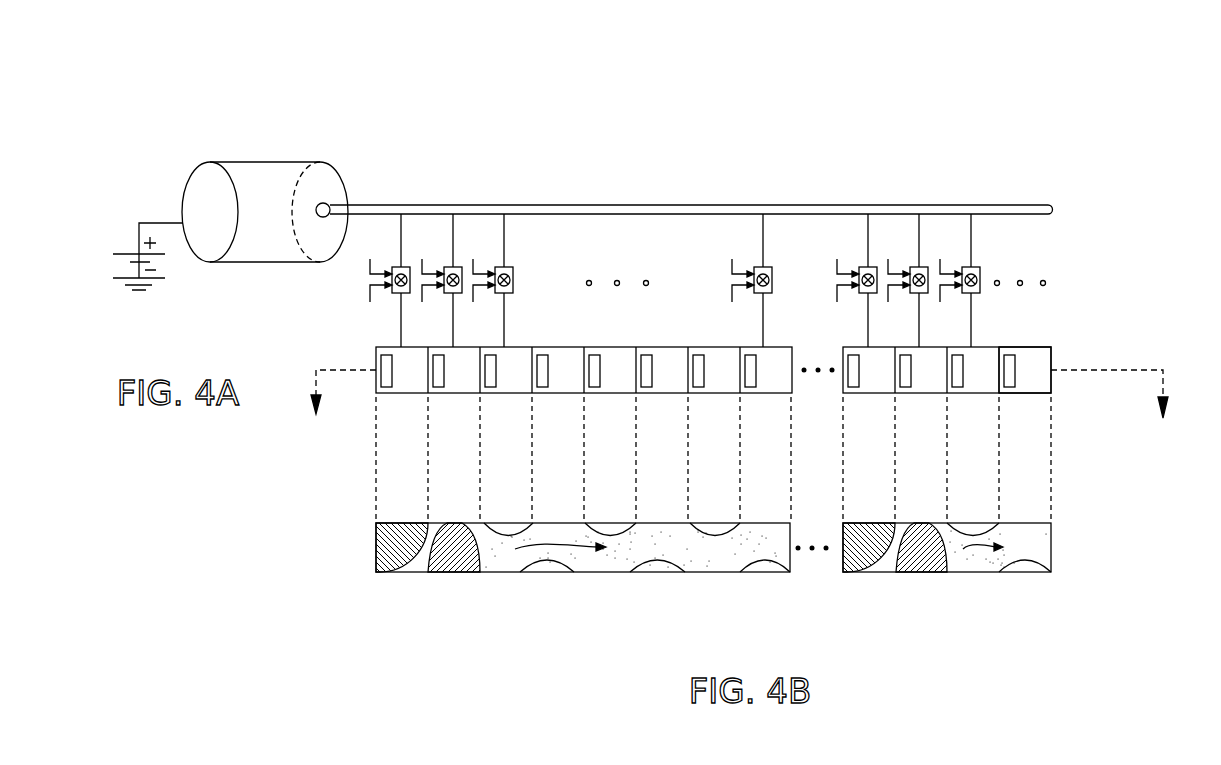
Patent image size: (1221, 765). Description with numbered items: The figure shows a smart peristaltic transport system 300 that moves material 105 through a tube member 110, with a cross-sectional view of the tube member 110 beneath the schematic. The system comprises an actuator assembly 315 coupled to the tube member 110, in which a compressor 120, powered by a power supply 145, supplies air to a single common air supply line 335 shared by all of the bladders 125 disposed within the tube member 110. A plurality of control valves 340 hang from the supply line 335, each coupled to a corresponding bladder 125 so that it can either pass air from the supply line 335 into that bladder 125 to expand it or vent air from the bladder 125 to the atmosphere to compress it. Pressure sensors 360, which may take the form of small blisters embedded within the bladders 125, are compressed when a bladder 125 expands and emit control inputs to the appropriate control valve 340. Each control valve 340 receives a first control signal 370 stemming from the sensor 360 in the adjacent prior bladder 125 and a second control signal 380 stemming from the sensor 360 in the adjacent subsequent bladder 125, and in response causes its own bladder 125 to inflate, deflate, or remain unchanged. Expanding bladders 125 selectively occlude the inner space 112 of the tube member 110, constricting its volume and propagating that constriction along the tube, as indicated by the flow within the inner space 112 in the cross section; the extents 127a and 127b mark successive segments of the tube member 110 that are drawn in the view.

In FIG. 4A, the actuator assembly 315 is at (139, 78).
In FIG. 4A, the smart peristaltic transport system 300 is at (988, 77).
In FIG. 4A, the compressor 120 is at (250, 160).
In FIG. 4A, the power supply 145 is at (128, 252).
In FIG. 4A, the common air supply line 335 is at (952, 205).
In FIG. 4A, the control valves 340 is at (507, 266).
In FIG. 4A, the first control signal 370 is at (356, 272).
In FIG. 4A, the second control signal 380 is at (354, 294).
In FIG. 4A, the tube member 110 is at (358, 350).
In FIG. 4B, the tube member 110 is at (360, 552).
In FIG. 4A, the pressure sensors 360 is at (537, 349).
In FIG. 4A, the bladders 125 is at (1045, 360).
In FIG. 4B, the bladders 125 is at (455, 566).
In FIG. 4B, the material 105 is at (605, 574).
In FIG. 4B, the inner space 112 is at (693, 558).
In FIG. 4B, the first segment 127a is at (384, 472).
In FIG. 4B, the second segment 127b is at (1115, 472).